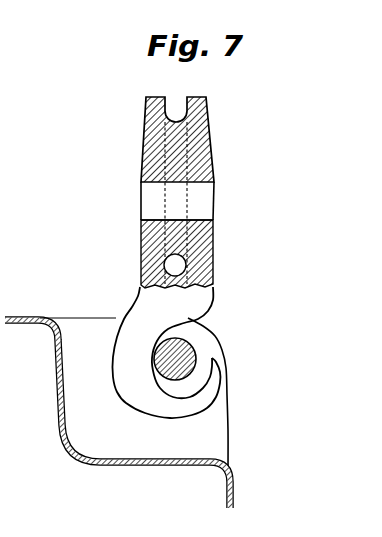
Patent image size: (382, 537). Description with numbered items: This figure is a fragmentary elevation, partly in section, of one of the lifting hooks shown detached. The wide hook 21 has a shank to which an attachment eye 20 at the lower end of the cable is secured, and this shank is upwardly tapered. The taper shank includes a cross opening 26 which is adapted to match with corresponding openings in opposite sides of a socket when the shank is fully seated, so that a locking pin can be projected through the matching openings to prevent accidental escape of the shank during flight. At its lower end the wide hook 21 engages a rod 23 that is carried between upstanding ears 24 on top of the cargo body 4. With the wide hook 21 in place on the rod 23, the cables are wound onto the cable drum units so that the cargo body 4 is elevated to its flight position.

The attachment eye 20 is at (215, 145).
The cross opening 26 is at (205, 207).
The wide hook 21 is at (150, 395).
The rod 23 is at (183, 348).
The upstanding ear 24 is at (208, 438).
The cargo body 4 is at (22, 338).